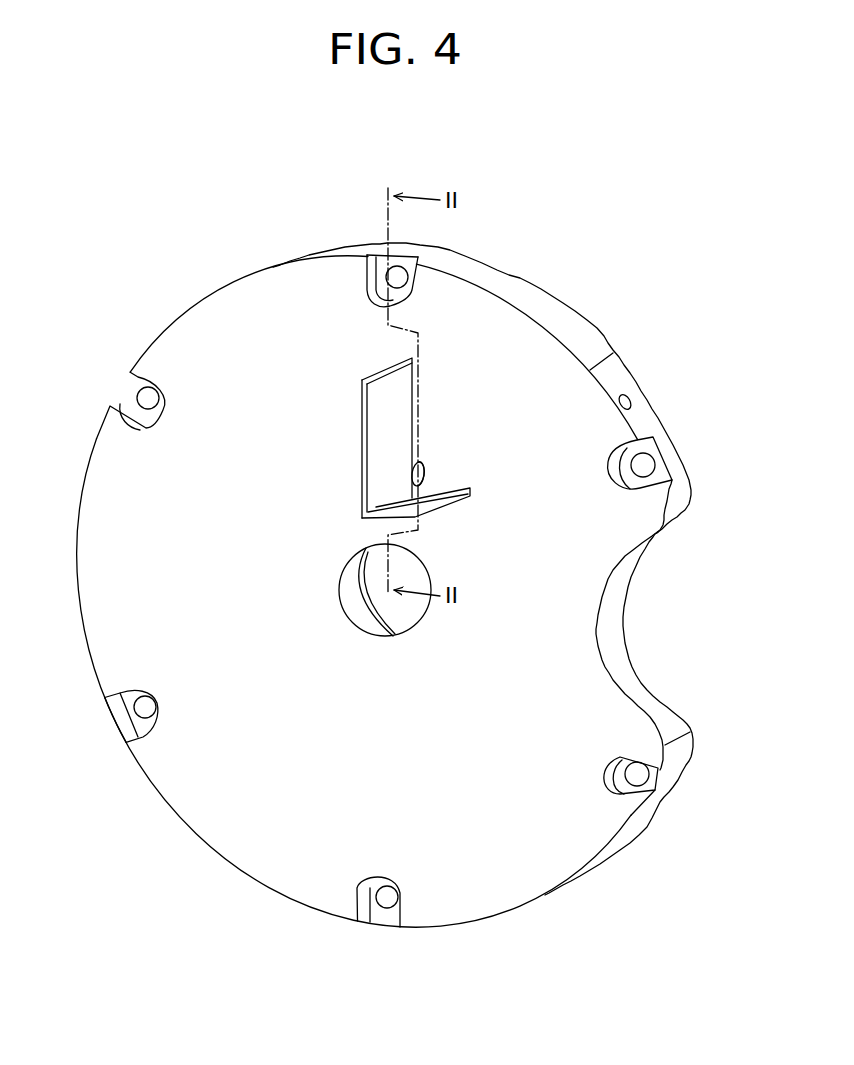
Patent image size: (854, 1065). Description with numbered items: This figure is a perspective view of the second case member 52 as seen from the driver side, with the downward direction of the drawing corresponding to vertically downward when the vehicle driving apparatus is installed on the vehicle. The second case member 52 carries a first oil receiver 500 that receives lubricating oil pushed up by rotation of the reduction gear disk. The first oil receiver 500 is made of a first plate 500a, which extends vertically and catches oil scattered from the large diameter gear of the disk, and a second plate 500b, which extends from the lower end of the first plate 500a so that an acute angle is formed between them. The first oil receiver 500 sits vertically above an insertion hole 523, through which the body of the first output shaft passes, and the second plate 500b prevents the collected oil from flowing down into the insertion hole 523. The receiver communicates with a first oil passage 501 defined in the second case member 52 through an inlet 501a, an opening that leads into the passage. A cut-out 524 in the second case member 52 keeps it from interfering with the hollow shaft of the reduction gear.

The second case member 52 is at (128, 290).
The first oil receiver 500 is at (461, 408).
The first plate 500a is at (400, 384).
The second plate 500b is at (437, 492).
The first oil passage 501 is at (410, 468).
The inlet 501a is at (428, 470).
The insertion hole 523 is at (342, 582).
The cut-out 524 is at (655, 610).